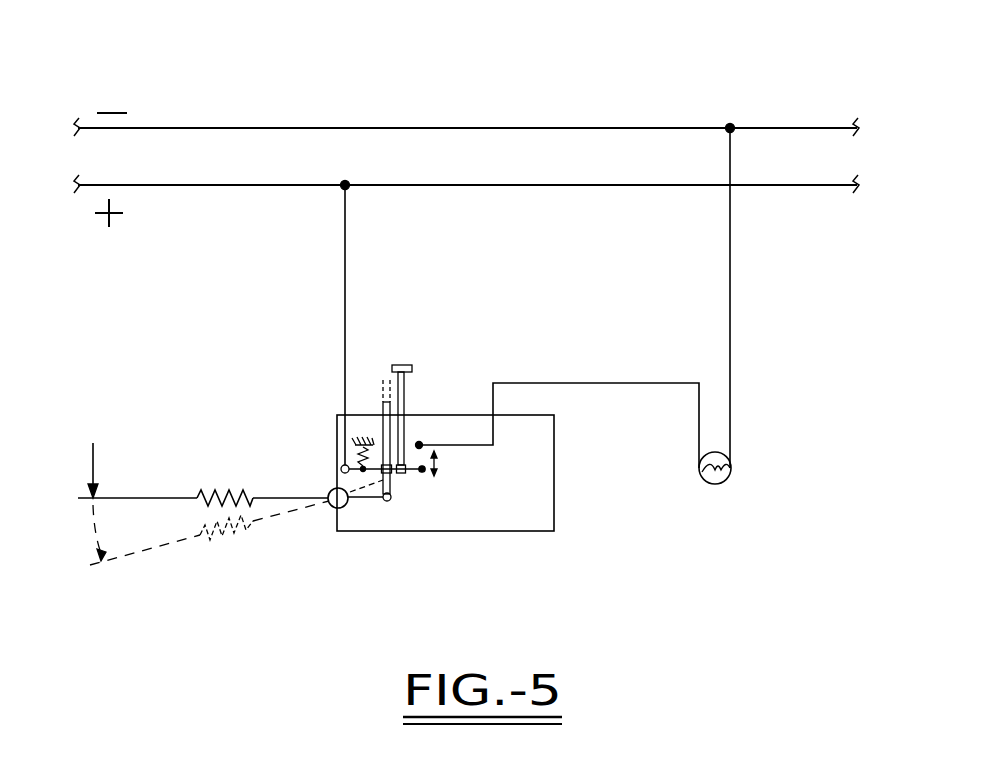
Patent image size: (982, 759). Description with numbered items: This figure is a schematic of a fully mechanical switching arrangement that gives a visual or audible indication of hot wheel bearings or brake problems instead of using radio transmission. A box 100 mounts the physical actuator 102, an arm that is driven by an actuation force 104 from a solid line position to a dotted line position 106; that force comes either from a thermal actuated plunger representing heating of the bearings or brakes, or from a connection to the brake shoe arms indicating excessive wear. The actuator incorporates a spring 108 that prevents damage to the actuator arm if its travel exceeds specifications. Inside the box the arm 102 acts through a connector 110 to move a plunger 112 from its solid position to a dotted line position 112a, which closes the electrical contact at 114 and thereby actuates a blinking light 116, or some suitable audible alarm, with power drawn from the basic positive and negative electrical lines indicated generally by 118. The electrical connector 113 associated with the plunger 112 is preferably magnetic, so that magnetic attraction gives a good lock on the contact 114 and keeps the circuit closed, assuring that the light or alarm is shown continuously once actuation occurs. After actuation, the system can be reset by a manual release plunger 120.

The box 100 is at (472, 531).
The physical actuator 102 is at (300, 495).
The actuation force 104 is at (93, 443).
The dotted line position 106 is at (172, 549).
The spring 108 is at (213, 490).
The connector 110 is at (330, 510).
The plunger 112 is at (387, 403).
The dotted line position of plunger 112a is at (385, 394).
The electrical connector 113 is at (422, 472).
The electrical contact 114 is at (419, 443).
The blinking light 116 is at (731, 475).
The positive/negative electrical line 118 is at (247, 124).
The manual release plunger 120 is at (413, 367).